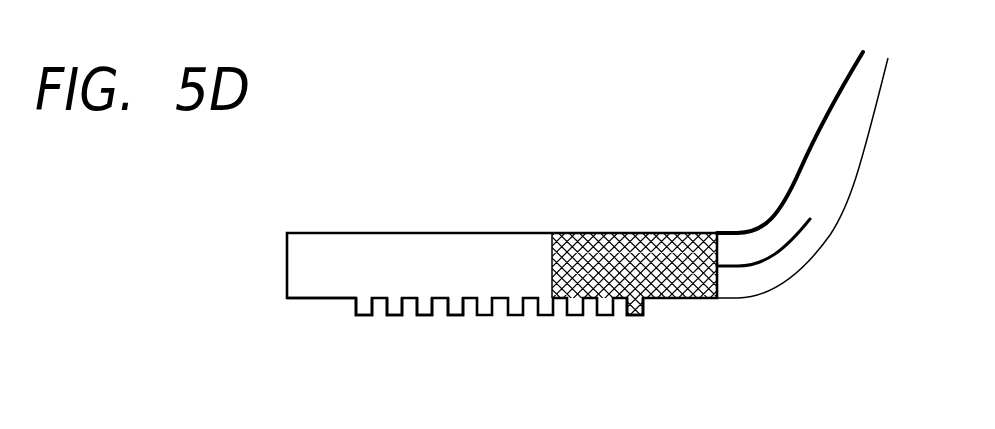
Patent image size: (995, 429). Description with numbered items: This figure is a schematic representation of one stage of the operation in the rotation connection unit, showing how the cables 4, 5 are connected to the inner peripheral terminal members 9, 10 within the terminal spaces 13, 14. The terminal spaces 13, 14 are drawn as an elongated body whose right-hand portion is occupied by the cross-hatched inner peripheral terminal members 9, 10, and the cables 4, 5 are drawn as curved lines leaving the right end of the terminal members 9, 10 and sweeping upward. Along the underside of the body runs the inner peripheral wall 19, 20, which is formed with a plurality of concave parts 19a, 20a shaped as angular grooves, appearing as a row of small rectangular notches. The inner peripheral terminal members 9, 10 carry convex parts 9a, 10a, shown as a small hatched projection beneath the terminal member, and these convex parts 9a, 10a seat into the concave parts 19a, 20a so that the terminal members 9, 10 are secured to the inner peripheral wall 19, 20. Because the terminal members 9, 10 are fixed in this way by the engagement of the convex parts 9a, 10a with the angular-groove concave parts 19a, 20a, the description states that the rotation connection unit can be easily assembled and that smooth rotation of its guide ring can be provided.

The cable 4 is at (812, 180).
The cable 5 is at (797, 237).
The inner peripheral terminal member 9 is at (650, 287).
The inner peripheral terminal member 10 is at (677, 288).
The convex part 9a is at (681, 353).
The convex part 10a is at (632, 315).
The terminal space 13 is at (452, 294).
The terminal space 14 is at (302, 278).
The inner peripheral wall 19 is at (321, 352).
The inner peripheral wall 20 is at (327, 299).
The concave part 19a is at (422, 352).
The concave part 20a is at (423, 315).